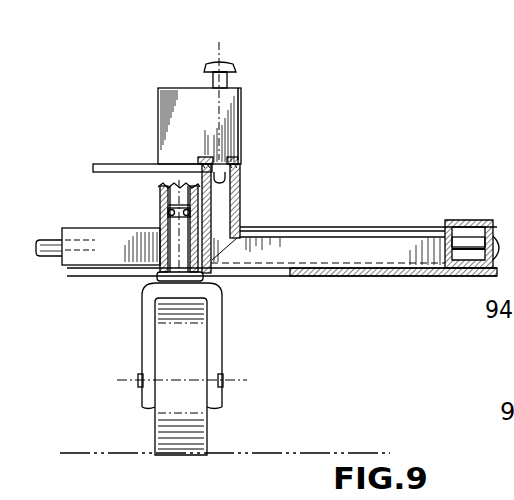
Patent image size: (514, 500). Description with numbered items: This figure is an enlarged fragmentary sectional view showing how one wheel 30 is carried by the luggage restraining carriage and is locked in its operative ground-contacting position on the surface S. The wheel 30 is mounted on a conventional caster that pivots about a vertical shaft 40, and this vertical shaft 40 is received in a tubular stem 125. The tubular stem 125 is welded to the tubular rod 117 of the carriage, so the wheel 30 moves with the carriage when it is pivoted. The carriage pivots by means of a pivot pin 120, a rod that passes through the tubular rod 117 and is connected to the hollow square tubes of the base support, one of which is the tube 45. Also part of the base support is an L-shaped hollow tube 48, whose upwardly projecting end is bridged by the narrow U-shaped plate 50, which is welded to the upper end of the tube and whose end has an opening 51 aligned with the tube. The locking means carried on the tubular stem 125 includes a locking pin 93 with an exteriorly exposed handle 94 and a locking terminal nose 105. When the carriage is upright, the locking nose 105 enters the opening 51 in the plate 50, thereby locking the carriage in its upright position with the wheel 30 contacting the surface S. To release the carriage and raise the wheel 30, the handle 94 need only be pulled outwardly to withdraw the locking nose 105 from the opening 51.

The wheel 30 is at (208, 446).
The vertical shaft 40 is at (177, 240).
The hollow square tube 45 is at (446, 220).
The L-shaped hollow tube 48 is at (348, 246).
The U-shaped plate 50 is at (116, 163).
The opening 51 is at (226, 156).
The locking pin 93 is at (236, 82).
The handle 94 is at (228, 66).
The locking terminal nose 105 is at (230, 186).
The tubular rod 117 is at (113, 252).
The pivot pin 120 is at (48, 238).
The tubular stem 125 is at (158, 200).
The surface S is at (296, 452).